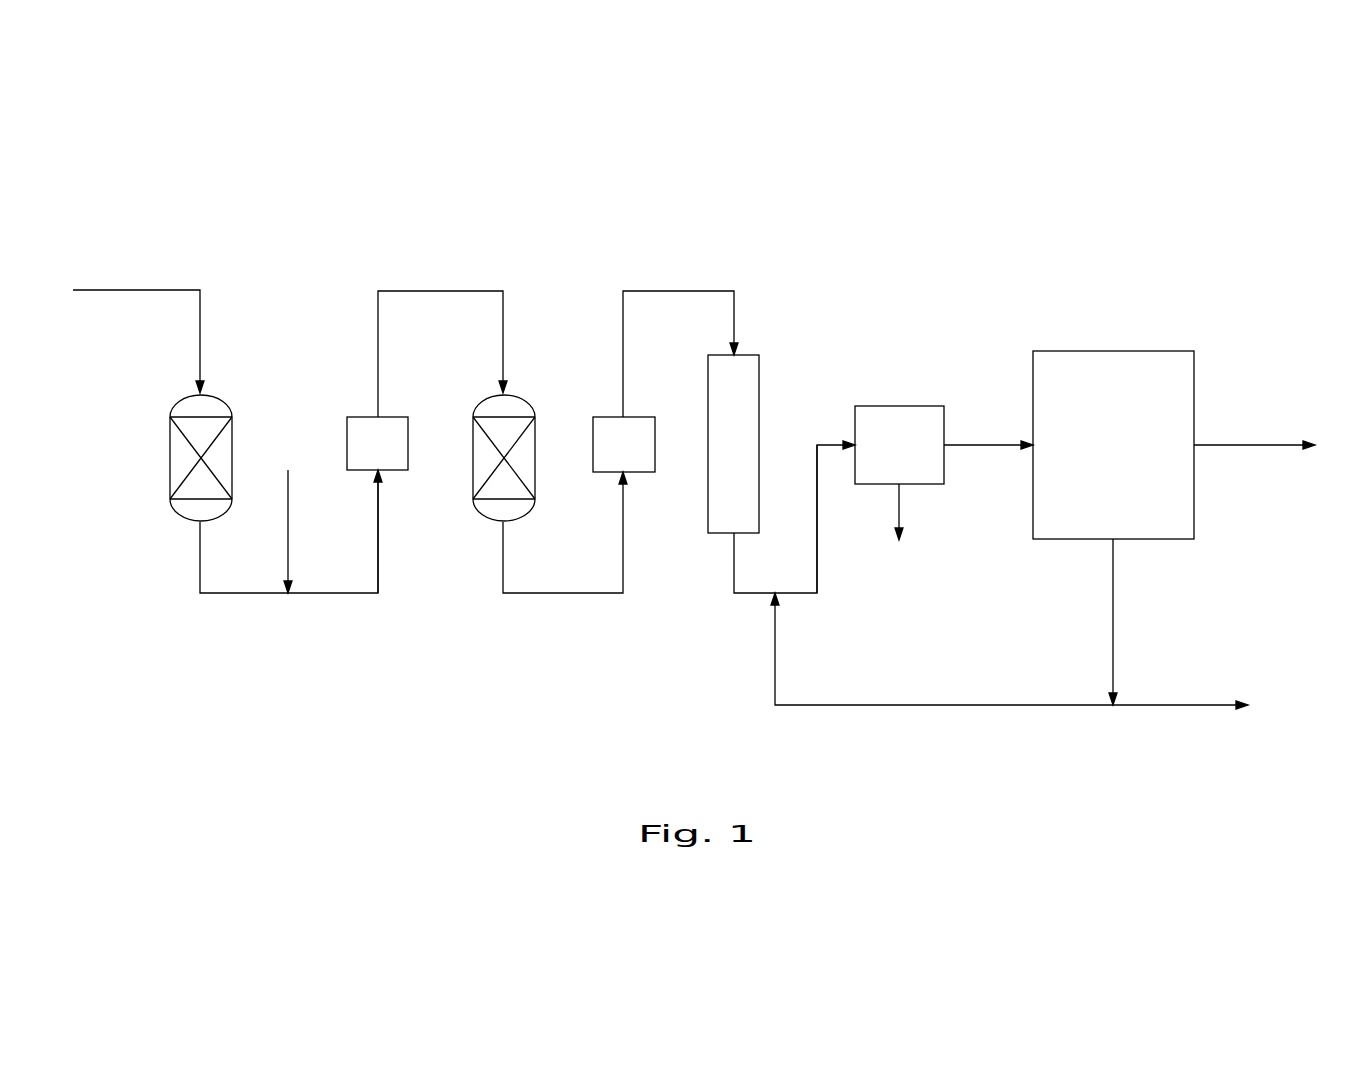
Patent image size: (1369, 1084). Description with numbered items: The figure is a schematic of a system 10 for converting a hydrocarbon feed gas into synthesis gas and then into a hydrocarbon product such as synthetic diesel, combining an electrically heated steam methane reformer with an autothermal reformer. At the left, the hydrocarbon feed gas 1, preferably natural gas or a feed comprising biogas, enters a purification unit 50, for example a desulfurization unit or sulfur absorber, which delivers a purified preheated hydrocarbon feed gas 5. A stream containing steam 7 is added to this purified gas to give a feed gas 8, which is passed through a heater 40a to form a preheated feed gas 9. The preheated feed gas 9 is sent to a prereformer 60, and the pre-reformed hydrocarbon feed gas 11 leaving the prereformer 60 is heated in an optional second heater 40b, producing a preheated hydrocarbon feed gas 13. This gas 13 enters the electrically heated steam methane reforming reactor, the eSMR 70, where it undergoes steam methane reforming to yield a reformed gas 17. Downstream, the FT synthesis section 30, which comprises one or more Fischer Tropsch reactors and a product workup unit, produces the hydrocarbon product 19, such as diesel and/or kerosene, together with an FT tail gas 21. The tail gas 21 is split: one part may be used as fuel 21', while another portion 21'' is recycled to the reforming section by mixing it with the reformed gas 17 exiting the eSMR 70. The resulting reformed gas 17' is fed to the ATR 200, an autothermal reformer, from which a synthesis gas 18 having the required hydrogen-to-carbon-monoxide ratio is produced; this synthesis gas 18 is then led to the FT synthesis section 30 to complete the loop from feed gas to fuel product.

The system 10 is at (812, 230).
The hydrocarbon feed gas 1 is at (129, 335).
The purification unit 50 is at (170, 437).
The purified preheated hydrocarbon feed gas 5 is at (277, 531).
The stream containing steam 7 is at (287, 516).
The feed gas 8 is at (388, 537).
The heater 40a is at (377, 443).
The preheated feed gas 9 is at (442, 338).
The prereformer 60 is at (473, 432).
The pre-reformed hydrocarbon feed gas 11 is at (565, 532).
The second heater 40b is at (624, 444).
The preheated hydrocarbon feed gas 13 is at (680, 338).
The electrically heated steam methane reforming reactor (eSMR) 70 is at (733, 444).
The reformed gas 17 is at (794, 517).
The reformed gas 17' is at (838, 519).
The ATR 200 is at (899, 473).
The synthesis gas 18 is at (988, 433).
The FT synthesis section 30 is at (1113, 445).
The hydrocarbon product 19 is at (1270, 446).
The FT tail gas 21 is at (1129, 622).
The fuel 21' is at (1196, 721).
The recycle portion of FT tail gas 21'' is at (942, 667).